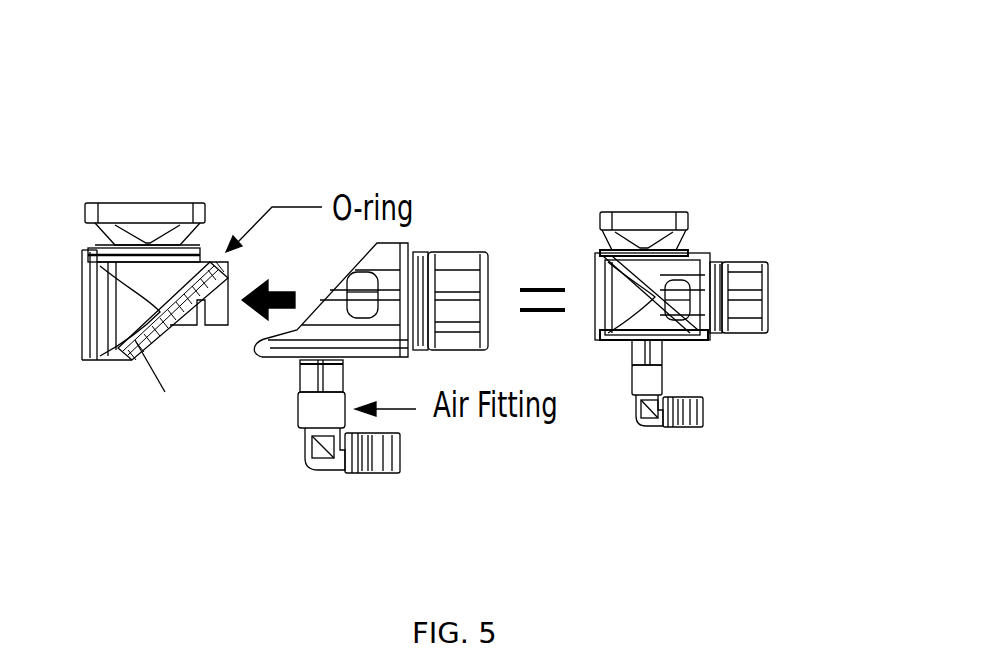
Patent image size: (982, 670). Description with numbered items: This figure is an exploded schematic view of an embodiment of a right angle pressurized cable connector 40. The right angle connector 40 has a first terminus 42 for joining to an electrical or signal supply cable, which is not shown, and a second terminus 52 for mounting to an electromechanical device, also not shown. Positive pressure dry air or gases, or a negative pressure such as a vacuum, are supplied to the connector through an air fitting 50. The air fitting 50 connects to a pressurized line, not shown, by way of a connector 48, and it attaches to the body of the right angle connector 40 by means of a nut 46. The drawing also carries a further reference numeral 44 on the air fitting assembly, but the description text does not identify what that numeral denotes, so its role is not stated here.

The right angle pressurized cable connector 40 is at (73, 112).
The first terminus 42 is at (470, 253).
The air fitting barb 44 is at (395, 474).
The nut 46 is at (298, 376).
The connector 48 is at (692, 424).
The air fitting 50 is at (637, 376).
The second terminus 52 is at (157, 201).